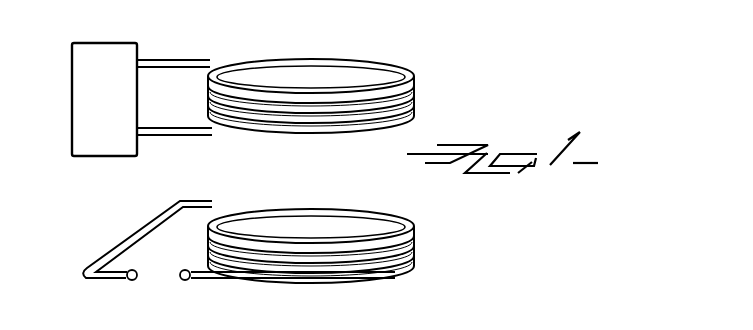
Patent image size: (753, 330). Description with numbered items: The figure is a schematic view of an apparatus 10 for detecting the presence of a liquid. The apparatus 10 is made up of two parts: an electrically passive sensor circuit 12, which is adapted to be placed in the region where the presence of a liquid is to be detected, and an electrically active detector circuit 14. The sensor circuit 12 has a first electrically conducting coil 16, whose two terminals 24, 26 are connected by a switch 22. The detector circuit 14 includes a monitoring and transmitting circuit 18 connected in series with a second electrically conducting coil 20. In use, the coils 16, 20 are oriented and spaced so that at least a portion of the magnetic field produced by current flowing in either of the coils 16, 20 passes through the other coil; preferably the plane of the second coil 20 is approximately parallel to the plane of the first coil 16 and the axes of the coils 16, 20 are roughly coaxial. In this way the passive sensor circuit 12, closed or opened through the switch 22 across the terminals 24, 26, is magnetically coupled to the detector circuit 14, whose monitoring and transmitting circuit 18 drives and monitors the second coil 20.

The apparatus 10 is at (251, 85).
The monitoring and transmitting circuit 18 is at (100, 42).
The electrically active detector circuit 14 is at (198, 55).
The second electrically conducting coil 20 is at (403, 65).
The electrically passive sensor circuit 12 is at (239, 254).
The switch 22 is at (175, 258).
The terminal 24 is at (126, 280).
The terminal 26 is at (190, 279).
The first electrically conducting coil 16 is at (383, 270).